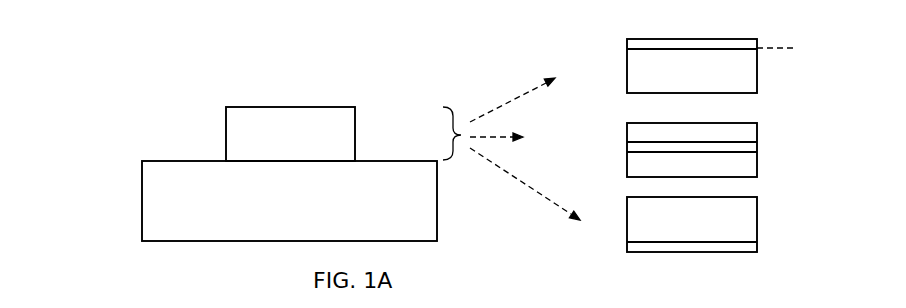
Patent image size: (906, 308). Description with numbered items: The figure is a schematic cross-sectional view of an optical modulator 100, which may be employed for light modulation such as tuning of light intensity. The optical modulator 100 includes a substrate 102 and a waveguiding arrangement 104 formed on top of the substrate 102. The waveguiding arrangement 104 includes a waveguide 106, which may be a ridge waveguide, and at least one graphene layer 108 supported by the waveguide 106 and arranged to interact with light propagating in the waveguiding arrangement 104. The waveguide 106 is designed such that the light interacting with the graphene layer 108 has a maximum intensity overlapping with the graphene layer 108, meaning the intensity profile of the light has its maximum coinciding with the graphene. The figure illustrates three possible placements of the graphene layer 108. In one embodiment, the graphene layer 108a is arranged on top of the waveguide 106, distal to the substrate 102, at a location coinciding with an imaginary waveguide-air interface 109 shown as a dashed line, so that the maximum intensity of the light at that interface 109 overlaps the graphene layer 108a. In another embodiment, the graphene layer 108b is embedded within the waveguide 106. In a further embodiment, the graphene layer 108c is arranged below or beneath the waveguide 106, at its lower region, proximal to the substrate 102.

The optical modulator 100 is at (387, 107).
The substrate 102 is at (142, 203).
The waveguiding arrangement 104 is at (214, 106).
The waveguide 106 is at (635, 163).
The graphene layer 108 is at (238, 148).
The graphene layer 108a is at (630, 45).
The graphene layer 108b is at (635, 145).
The graphene layer 108c is at (635, 248).
The waveguide-air interface 109 is at (780, 48).